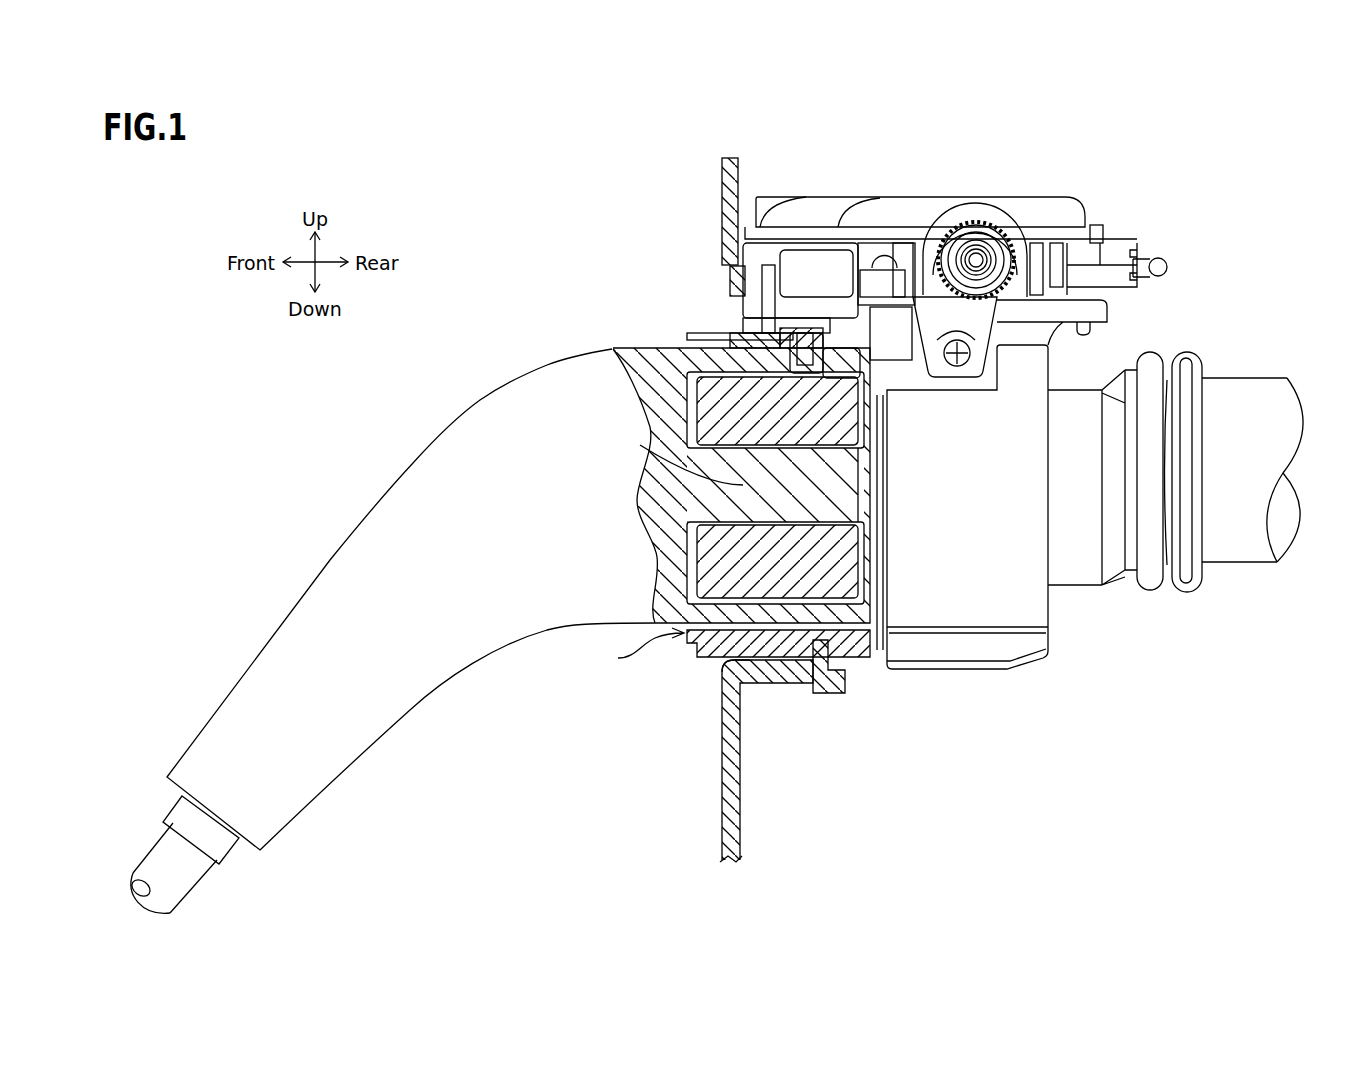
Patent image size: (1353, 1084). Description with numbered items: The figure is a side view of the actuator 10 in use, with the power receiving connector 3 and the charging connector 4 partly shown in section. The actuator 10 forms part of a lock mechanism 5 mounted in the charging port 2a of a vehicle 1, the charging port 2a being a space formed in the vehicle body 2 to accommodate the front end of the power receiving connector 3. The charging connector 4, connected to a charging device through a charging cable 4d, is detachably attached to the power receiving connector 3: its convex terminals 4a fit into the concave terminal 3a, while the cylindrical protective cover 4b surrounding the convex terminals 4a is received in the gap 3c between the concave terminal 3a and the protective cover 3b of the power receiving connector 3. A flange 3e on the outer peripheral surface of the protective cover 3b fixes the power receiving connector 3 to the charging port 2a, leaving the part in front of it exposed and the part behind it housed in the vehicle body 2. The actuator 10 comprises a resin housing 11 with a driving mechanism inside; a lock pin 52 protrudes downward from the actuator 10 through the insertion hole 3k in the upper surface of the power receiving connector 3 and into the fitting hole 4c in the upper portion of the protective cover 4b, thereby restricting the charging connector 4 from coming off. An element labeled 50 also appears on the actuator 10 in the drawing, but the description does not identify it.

The vehicle 1 is at (708, 189).
The vehicle body 2 is at (718, 240).
The charging port 2a is at (727, 664).
The power receiving connector 3 is at (962, 583).
The concave terminal 3a is at (830, 565).
The protective cover 3b is at (768, 660).
The gap 3c is at (635, 650).
The flange 3e is at (835, 695).
The insertion hole 3k is at (730, 283).
The charging connector 4 is at (410, 495).
The convex terminals 4a is at (607, 350).
The protective cover 4b is at (700, 322).
The fitting hole 4c is at (690, 338).
The charging cable 4d is at (185, 876).
The lock mechanism 5 is at (818, 184).
The lock cover 50 is at (828, 224).
The actuator 10 is at (991, 182).
The housing 11 is at (1055, 200).
The lock pin 52 is at (813, 360).